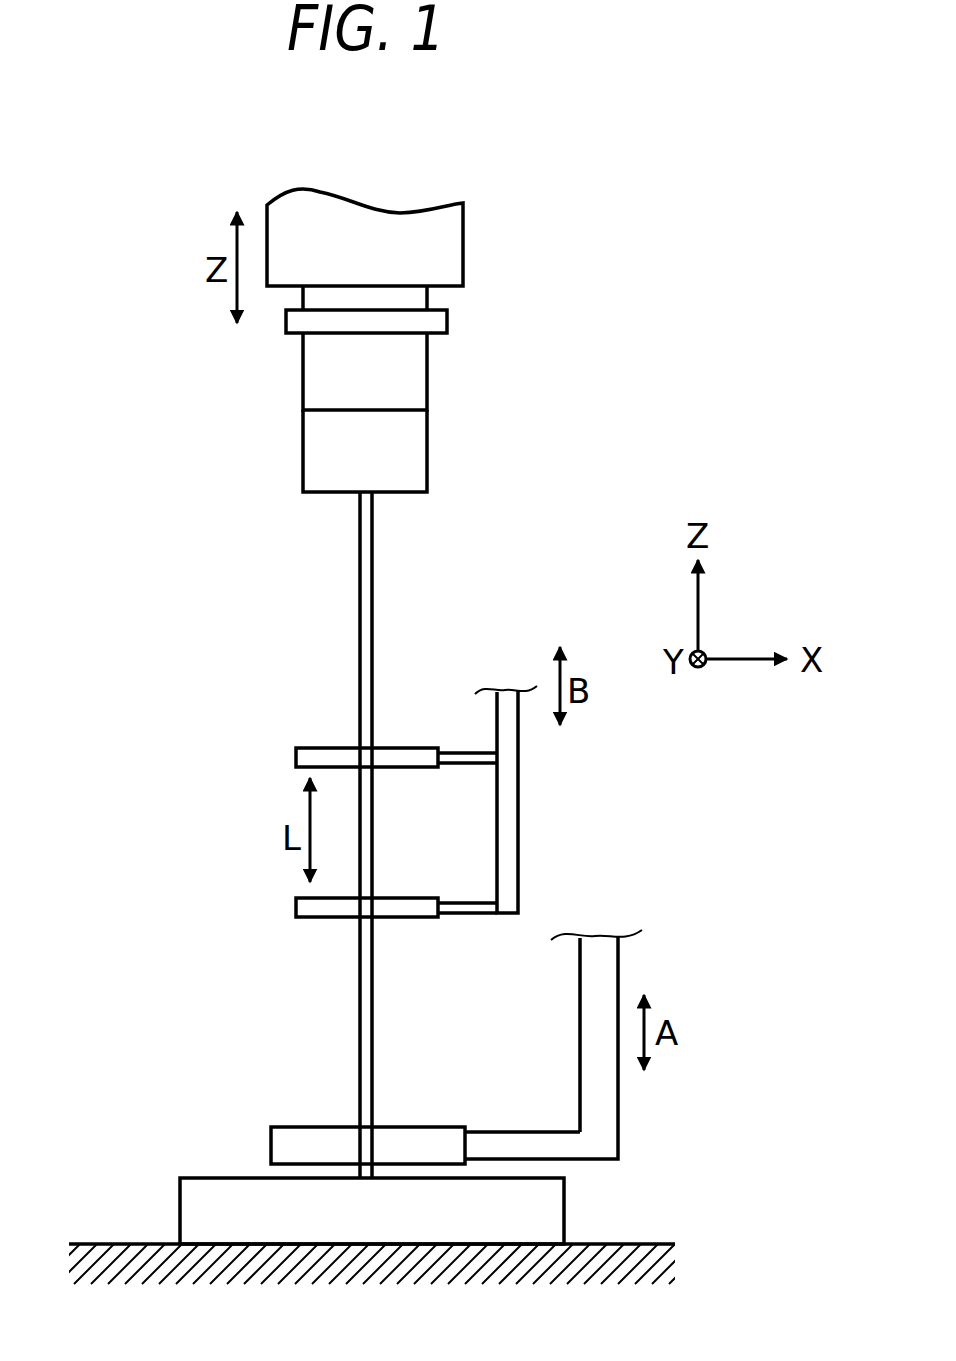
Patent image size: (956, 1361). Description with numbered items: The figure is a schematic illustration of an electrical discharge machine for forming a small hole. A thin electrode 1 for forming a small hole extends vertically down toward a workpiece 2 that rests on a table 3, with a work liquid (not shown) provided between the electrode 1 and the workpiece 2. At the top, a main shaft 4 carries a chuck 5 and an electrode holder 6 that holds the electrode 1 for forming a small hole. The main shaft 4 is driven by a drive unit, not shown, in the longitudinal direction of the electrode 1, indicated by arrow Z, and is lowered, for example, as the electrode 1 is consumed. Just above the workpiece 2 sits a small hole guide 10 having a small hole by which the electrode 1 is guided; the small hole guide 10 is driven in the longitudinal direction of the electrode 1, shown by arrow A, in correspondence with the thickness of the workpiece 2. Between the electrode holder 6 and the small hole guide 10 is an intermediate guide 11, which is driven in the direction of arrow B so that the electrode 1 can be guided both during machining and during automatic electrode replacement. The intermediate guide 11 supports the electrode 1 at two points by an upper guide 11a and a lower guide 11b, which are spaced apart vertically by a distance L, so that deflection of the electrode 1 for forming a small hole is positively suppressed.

The electrode for forming a small hole 1 is at (374, 605).
The workpiece 2 is at (207, 1185).
The table 3 is at (118, 1252).
The main shaft 4 is at (417, 300).
The chuck 5 is at (417, 372).
The electrode holder 6 is at (417, 450).
The small hole guide 10 is at (288, 1138).
The intermediate guide 11 is at (508, 803).
The upper guide 11a is at (296, 755).
The lower guide 11b is at (296, 902).